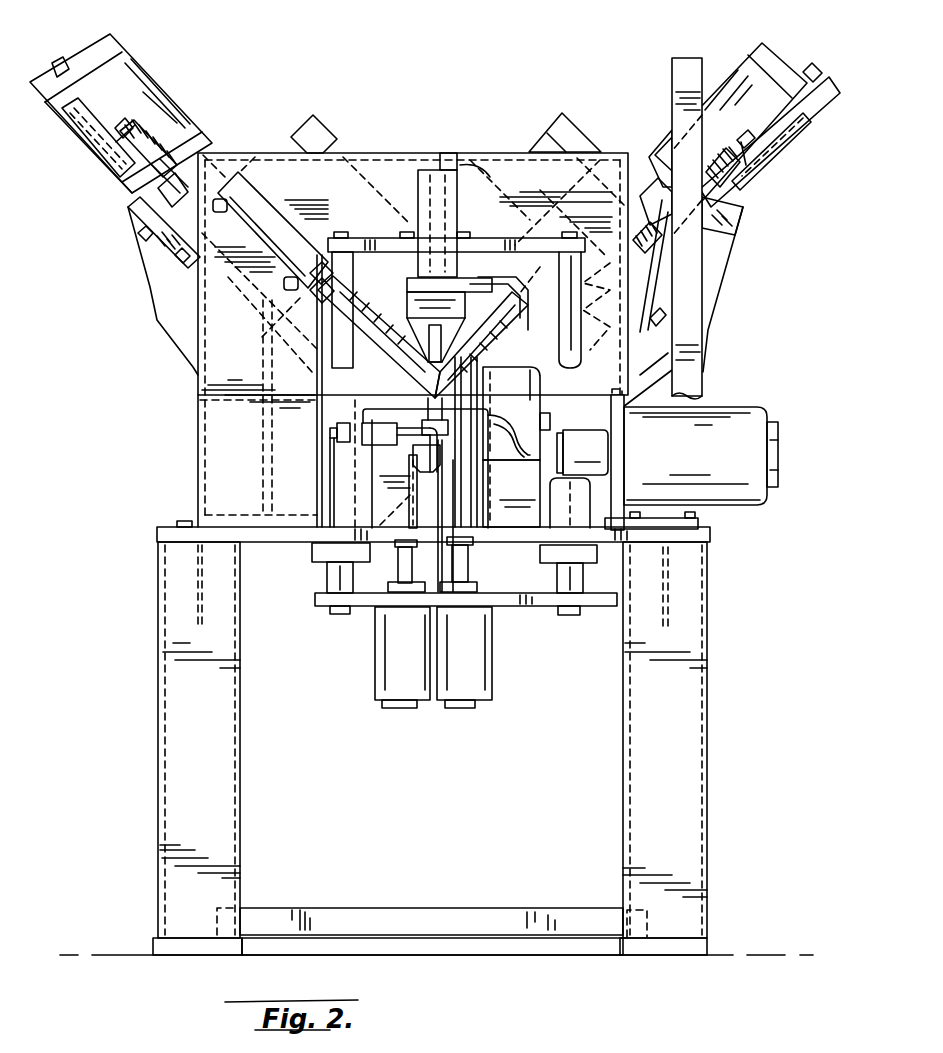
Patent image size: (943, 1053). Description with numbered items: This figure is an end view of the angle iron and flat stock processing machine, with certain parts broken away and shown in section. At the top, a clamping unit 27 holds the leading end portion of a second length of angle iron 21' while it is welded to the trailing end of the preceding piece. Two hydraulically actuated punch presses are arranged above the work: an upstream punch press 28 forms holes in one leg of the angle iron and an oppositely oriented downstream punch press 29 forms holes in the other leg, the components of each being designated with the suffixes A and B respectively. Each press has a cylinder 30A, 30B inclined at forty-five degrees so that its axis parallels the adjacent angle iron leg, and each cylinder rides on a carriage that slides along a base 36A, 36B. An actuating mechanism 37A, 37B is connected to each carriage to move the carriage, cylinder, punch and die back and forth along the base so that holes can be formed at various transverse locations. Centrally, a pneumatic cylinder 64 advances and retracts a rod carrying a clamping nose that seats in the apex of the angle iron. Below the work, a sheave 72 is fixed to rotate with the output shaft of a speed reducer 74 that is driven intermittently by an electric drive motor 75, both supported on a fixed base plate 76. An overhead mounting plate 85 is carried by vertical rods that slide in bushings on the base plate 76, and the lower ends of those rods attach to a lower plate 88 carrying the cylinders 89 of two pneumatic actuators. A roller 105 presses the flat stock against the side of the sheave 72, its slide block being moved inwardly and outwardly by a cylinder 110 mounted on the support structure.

The angle iron 21' is at (496, 337).
The clamping unit 27 is at (403, 200).
The punch press 28 is at (606, 126).
The punch press 29 is at (340, 126).
The cylinder 30A is at (597, 124).
The cylinder 30B is at (293, 133).
The base 36A is at (156, 290).
The base 36B is at (728, 275).
The actuating mechanism 37A is at (168, 82).
The actuating mechanism 37B is at (730, 72).
The cylinder 64 is at (492, 172).
The sheave 72 is at (445, 488).
The speed reducer 74 is at (522, 408).
The electric drive motor 75 is at (748, 413).
The base plate 76 is at (277, 542).
The overhead mounting plate 85 is at (515, 240).
The lower plate 88 is at (540, 607).
The cylinders 89 is at (393, 657).
The roller 105 is at (385, 300).
The cylinder 110 is at (300, 217).